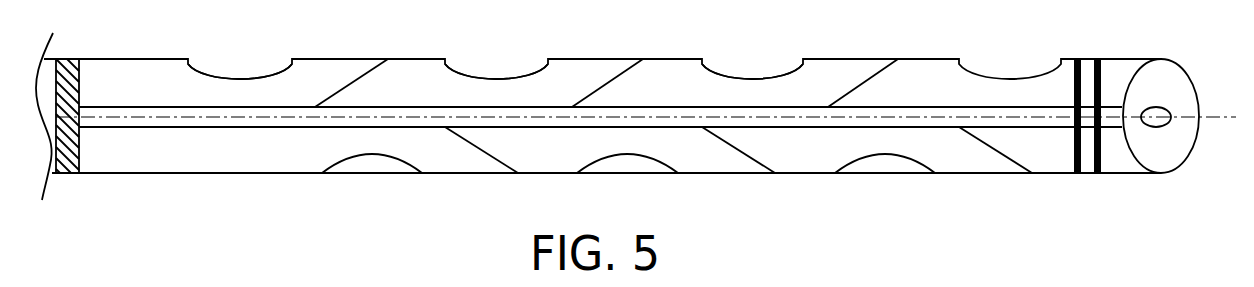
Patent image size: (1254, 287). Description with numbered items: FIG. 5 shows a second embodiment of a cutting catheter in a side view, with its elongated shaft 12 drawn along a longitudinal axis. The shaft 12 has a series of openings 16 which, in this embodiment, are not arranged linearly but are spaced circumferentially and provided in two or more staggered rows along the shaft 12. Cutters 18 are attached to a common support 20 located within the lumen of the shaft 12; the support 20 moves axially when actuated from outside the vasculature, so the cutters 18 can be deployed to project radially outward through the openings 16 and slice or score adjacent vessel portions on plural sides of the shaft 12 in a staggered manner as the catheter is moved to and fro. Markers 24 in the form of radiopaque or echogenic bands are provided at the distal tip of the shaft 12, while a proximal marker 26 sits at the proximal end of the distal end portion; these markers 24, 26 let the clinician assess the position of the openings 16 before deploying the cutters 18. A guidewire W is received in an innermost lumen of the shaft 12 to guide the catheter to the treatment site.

The shaft 12 is at (813, 174).
The openings 16 is at (273, 72).
The cutters 18 is at (367, 73).
The common support 20 is at (247, 128).
The markers 24 is at (1077, 58).
The proximal markers 26 is at (67, 60).
The guidewire W is at (1167, 110).